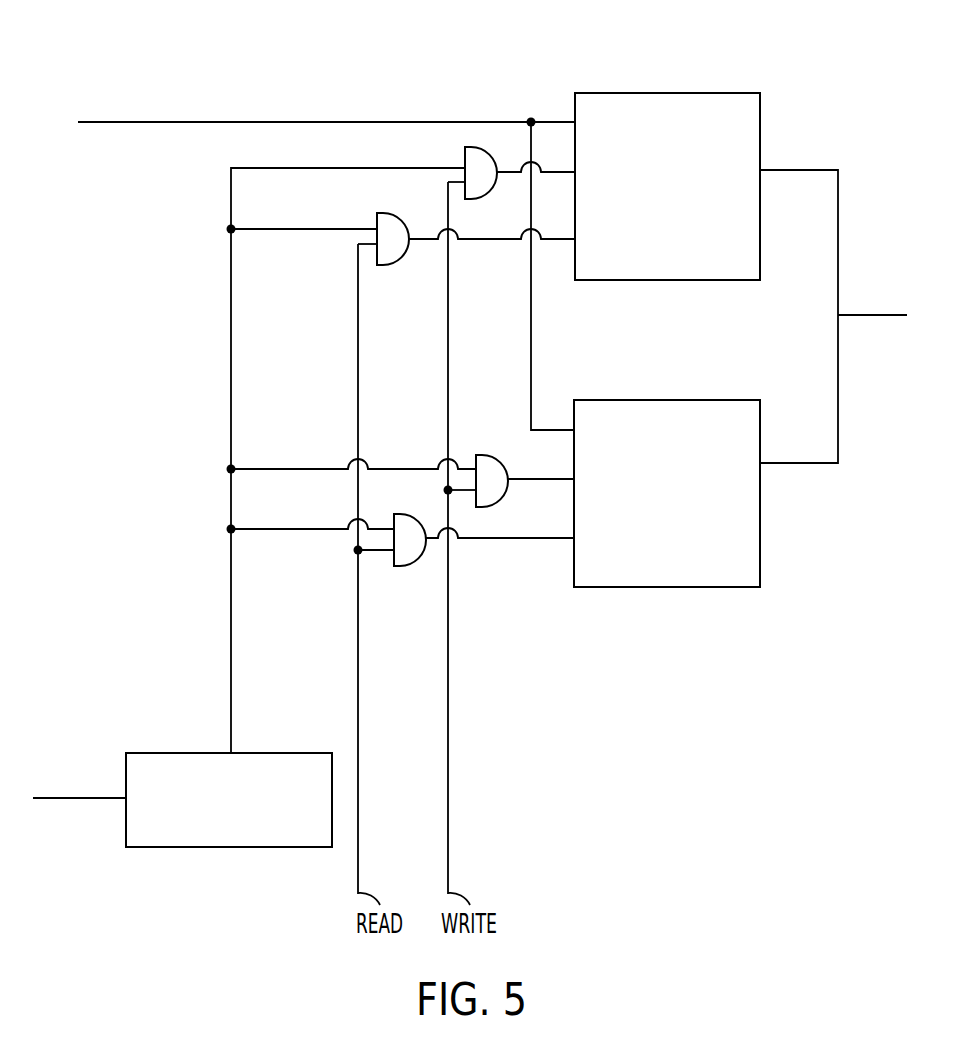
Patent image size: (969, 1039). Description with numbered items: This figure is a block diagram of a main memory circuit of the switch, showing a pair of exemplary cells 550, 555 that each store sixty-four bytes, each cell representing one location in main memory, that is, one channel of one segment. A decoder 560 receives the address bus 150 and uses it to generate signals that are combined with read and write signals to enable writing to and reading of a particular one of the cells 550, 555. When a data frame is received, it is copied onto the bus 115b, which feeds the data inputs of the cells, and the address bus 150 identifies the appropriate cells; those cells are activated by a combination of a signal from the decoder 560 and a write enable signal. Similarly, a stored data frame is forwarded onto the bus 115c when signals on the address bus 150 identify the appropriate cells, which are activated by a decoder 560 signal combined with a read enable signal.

The bus 115b is at (158, 122).
The bus 115c is at (855, 315).
The address bus 150 is at (87, 798).
The cell 550 is at (678, 93).
The cell 555 is at (678, 400).
The decoder 560 is at (200, 753).